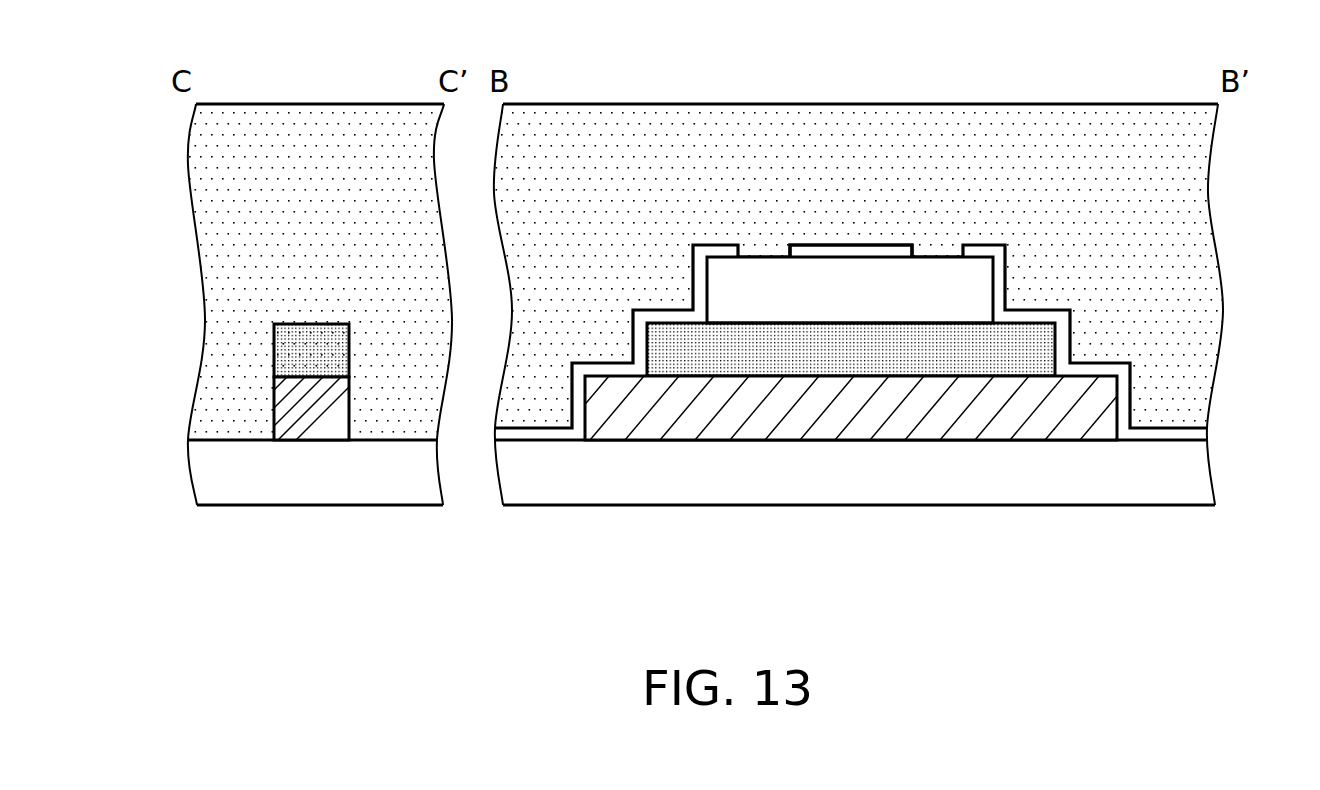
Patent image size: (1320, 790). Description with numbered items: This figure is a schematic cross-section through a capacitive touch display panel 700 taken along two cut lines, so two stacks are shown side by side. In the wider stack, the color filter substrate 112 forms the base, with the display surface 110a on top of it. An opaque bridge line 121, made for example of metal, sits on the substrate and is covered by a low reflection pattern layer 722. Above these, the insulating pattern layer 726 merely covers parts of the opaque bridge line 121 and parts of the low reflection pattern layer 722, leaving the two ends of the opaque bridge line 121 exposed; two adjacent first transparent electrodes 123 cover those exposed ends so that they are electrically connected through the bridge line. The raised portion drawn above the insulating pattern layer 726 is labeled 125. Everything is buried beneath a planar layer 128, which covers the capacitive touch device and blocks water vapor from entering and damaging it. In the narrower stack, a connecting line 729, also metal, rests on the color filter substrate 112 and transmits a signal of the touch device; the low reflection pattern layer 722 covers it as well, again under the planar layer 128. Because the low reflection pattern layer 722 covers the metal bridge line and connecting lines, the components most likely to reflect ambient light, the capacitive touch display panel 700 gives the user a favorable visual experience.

The planar layer 128 is at (205, 160).
The upper electrode layer 125 is at (860, 252).
The insulating pattern layer 726 is at (878, 293).
The low reflection pattern layer 722 is at (293, 350).
The connecting lines 729 is at (335, 425).
The opaque bridge line 121 is at (1030, 410).
The first transparent electrodes 123 is at (617, 370).
The display surface 110a is at (1175, 440).
The color filter substrate 112 is at (1190, 475).
The capacitive touch display panel 700 is at (1248, 583).